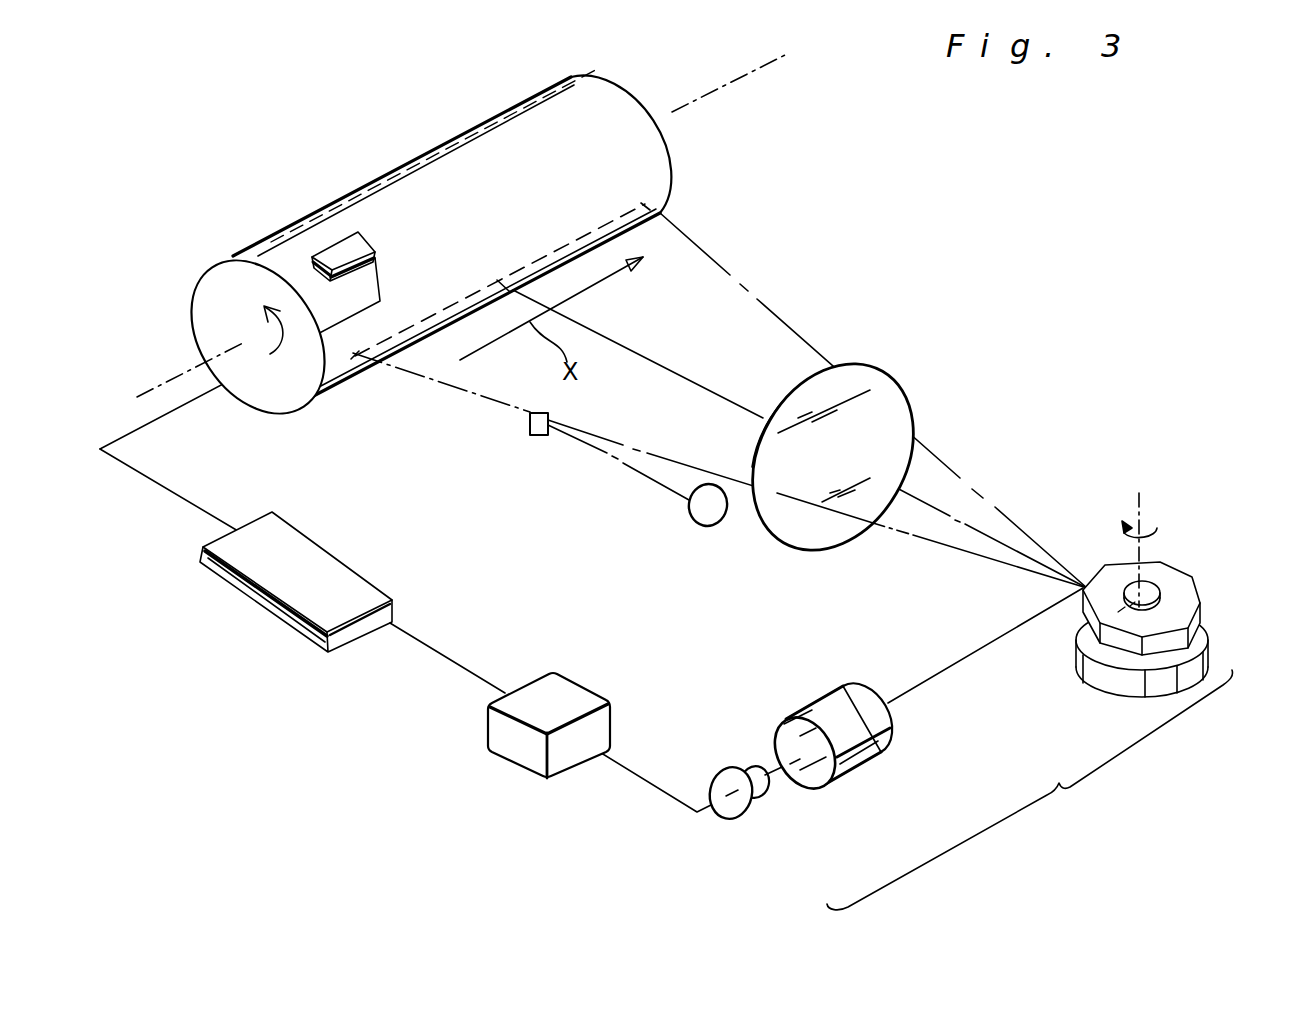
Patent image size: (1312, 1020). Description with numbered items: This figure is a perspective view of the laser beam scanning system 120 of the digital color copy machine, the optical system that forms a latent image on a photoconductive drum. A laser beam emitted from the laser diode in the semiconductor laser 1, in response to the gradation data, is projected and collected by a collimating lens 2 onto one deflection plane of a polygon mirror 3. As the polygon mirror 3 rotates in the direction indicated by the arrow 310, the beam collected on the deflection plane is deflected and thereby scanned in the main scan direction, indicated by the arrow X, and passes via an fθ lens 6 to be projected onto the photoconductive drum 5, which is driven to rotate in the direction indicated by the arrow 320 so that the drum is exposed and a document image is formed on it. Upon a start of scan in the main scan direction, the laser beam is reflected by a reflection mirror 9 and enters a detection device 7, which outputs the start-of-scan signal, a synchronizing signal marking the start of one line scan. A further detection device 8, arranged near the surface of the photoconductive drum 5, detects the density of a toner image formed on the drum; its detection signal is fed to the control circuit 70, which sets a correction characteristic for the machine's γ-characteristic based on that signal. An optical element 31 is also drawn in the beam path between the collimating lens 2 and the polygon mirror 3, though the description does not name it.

The semiconductor laser 1 is at (745, 810).
The collimating lens 2 is at (864, 770).
The polygon mirror 3 is at (1175, 593).
The photoconductive drum 5 is at (368, 203).
The fθ lens 6 is at (857, 382).
The detection device 7 is at (711, 510).
The detection device 8 is at (338, 250).
The reflection mirror 9 is at (538, 437).
The cylindrical lens 31 is at (578, 683).
The control circuit 70 is at (323, 553).
The laser beam scanning system 120 is at (1030, 790).
The arrow 310 is at (1122, 545).
The arrow 320 is at (262, 336).